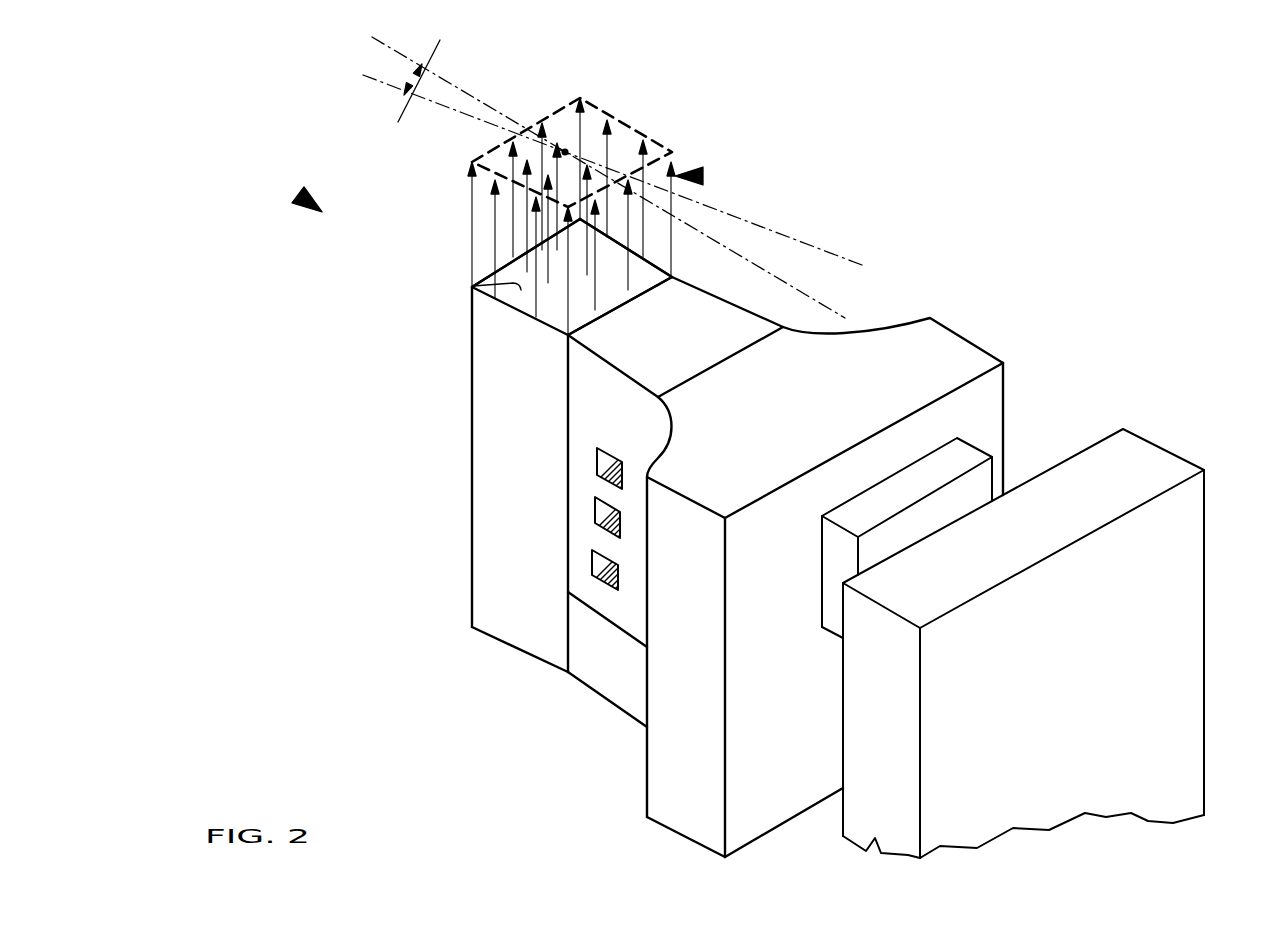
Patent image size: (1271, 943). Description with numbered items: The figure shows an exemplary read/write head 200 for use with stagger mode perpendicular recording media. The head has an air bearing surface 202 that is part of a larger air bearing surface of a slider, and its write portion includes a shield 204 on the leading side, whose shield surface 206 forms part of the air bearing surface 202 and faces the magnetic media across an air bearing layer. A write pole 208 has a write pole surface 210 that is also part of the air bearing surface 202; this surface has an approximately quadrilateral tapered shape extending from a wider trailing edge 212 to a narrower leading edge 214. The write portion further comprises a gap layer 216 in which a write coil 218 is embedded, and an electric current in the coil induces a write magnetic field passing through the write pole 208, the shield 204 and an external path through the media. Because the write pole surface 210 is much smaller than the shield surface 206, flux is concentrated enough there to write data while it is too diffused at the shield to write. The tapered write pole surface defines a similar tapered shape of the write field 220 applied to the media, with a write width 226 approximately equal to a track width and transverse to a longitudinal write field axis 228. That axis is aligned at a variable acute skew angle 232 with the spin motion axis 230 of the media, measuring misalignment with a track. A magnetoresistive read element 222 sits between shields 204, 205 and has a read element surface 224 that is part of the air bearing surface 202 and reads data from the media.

The read/write head 200 is at (300, 196).
The air bearing surface 202 is at (903, 327).
The shield 204 is at (1008, 364).
The shield 205 is at (1096, 430).
The shield surface 206 is at (758, 434).
The write pole 208 is at (470, 399).
The write pole surface 210 is at (472, 287).
The trailing edge 212 is at (495, 268).
The leading edge 214 is at (658, 288).
The gap layer 216 is at (690, 352).
The write coil 218 is at (622, 135).
The write field 220 is at (703, 177).
The magnetoresistive read element 222 is at (822, 606).
The read element surface 224 is at (923, 501).
The write width 226 is at (557, 104).
The longitudinal write field axis 228 is at (437, 76).
The spin motion axis 230 is at (422, 104).
The skew angle 232 is at (415, 76).